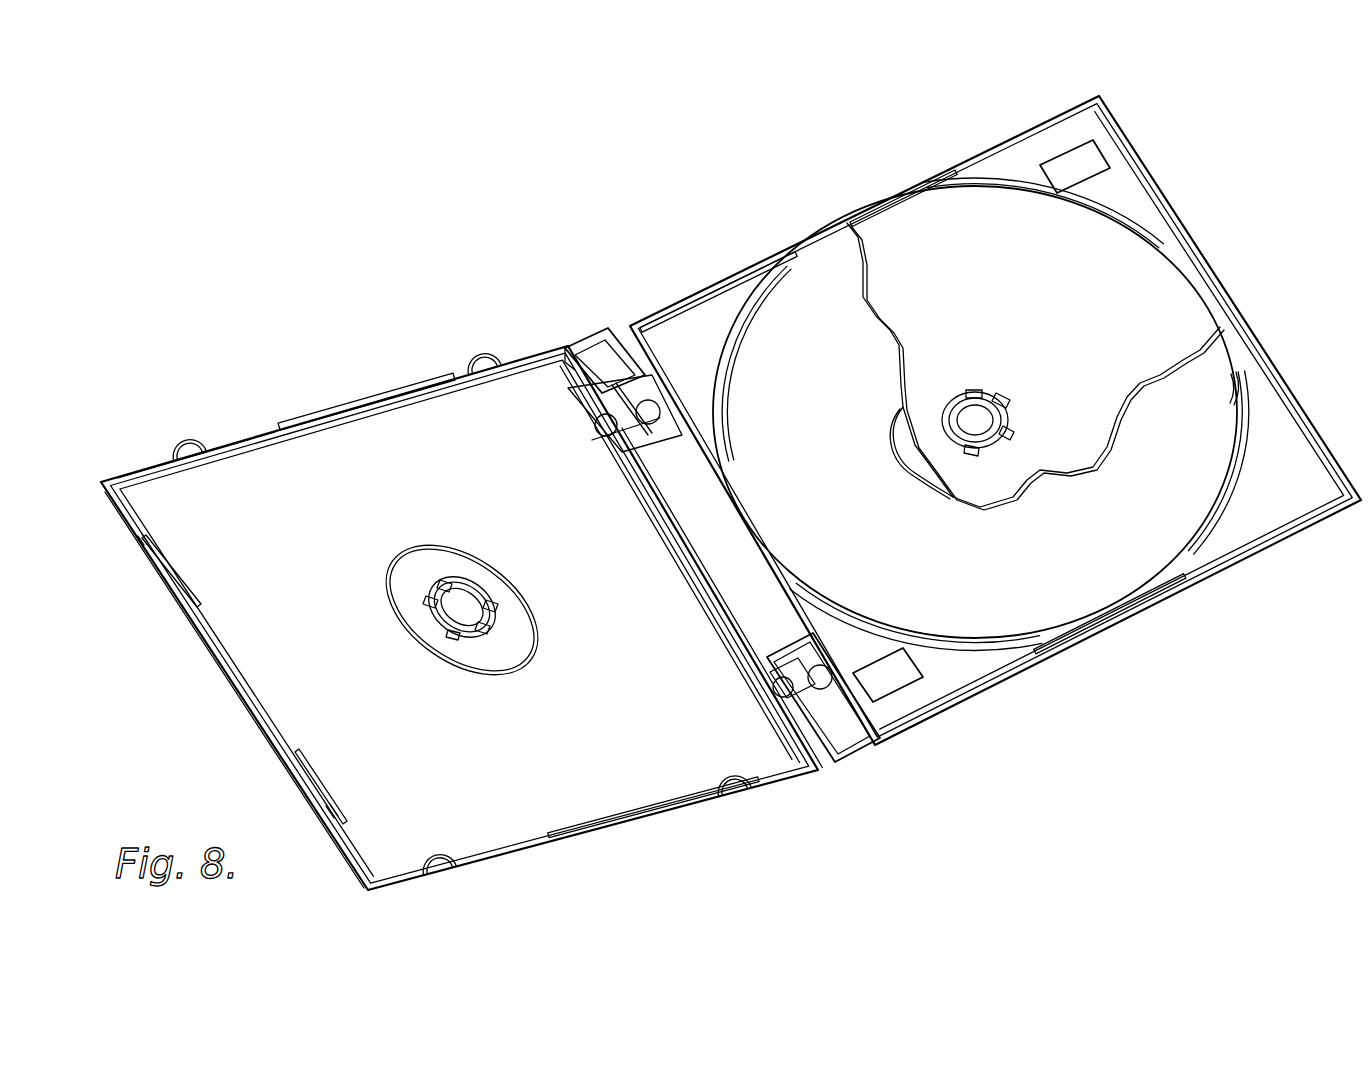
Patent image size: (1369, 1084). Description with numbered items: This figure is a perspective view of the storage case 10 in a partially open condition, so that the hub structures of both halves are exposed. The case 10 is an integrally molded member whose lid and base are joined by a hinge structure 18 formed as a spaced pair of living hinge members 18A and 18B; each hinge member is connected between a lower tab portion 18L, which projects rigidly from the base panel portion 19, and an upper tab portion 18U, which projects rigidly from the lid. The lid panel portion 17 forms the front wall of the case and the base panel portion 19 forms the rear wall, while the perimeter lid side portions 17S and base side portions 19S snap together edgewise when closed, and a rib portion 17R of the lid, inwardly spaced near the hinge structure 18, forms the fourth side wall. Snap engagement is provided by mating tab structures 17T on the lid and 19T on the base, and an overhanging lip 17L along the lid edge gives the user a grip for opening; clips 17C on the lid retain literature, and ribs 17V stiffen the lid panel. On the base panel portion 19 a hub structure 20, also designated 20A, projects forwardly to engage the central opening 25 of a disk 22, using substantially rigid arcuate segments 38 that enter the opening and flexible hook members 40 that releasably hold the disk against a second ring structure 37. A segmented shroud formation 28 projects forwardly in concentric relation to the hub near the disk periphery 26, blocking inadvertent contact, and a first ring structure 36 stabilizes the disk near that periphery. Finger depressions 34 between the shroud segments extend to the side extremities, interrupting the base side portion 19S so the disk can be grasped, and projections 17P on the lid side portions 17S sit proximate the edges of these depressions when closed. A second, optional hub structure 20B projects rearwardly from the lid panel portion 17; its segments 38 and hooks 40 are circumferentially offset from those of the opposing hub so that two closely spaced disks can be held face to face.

The storage case 10 is at (240, 783).
The lid panel portion 17 is at (432, 700).
The lid side portion 17S is at (228, 440).
The projection 17P is at (337, 412).
The clip of tray 17C is at (476, 386).
The tab structure 17T is at (144, 540).
The rib of tray 17V is at (205, 605).
The overhanging lip 17L is at (232, 682).
The rib portion 17R is at (712, 584).
The hinge structure 18 is at (660, 372).
The hinge member 18A is at (664, 410).
The upper tab portion 18U is at (612, 442).
The lower tab portion 18L is at (640, 442).
The hinge member 18B is at (770, 680).
The base panel portion 19 is at (829, 445).
The base side portion 19S is at (718, 278).
The tab structure 19T is at (1145, 180).
The hub structure 20 is at (516, 620).
The hub structure 20A is at (1022, 417).
The hub structure 20B is at (498, 597).
The disk 22 is at (996, 325).
The central opening 25 is at (975, 420).
The periphery 26 is at (1220, 322).
The shroud formation 28 is at (1255, 415).
The finger depression 34 is at (832, 223).
The first ring structure 36 is at (1232, 385).
The second ring structure 37 is at (404, 628).
The arcuate segment 38 is at (432, 600).
The hook member 40 is at (443, 583).